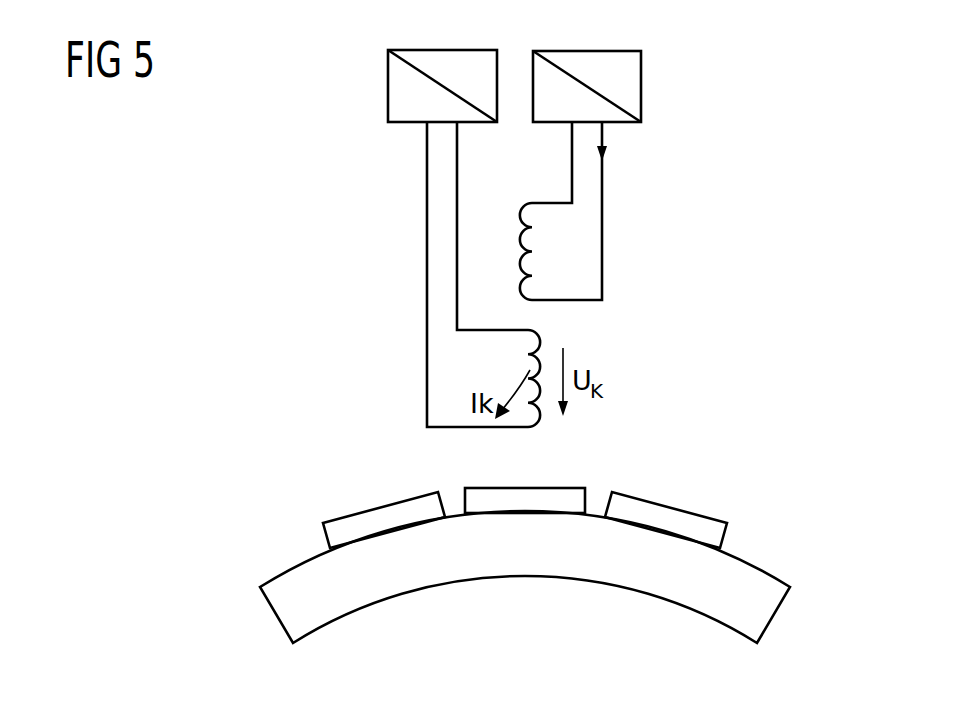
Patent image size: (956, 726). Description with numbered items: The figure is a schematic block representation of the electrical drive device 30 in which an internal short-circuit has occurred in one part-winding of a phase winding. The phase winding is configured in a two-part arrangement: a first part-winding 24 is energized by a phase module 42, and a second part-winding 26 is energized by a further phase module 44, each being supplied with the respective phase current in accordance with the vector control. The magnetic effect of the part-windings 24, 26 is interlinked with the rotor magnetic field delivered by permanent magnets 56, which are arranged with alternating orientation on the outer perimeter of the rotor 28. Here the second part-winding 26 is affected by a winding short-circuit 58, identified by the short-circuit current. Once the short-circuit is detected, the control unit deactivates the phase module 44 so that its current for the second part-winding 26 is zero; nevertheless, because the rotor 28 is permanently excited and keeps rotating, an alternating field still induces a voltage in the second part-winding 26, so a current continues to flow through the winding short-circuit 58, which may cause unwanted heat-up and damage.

The phase module 44 is at (388, 88).
The phase module 42 is at (641, 89).
The electrical drive device 30 is at (770, 164).
The part-winding 24 is at (531, 265).
The part-winding 26 is at (530, 366).
The winding short-circuit 58 is at (485, 383).
The rotor 28 is at (566, 627).
The permanent magnets 56 is at (393, 520).